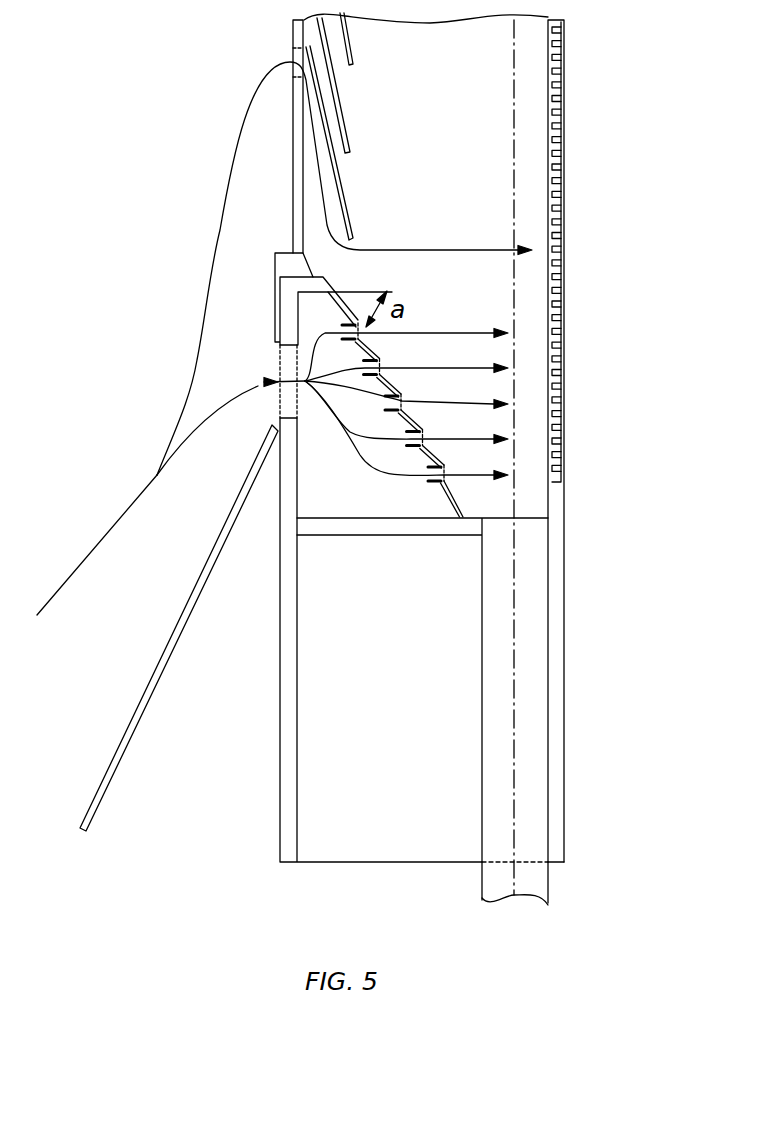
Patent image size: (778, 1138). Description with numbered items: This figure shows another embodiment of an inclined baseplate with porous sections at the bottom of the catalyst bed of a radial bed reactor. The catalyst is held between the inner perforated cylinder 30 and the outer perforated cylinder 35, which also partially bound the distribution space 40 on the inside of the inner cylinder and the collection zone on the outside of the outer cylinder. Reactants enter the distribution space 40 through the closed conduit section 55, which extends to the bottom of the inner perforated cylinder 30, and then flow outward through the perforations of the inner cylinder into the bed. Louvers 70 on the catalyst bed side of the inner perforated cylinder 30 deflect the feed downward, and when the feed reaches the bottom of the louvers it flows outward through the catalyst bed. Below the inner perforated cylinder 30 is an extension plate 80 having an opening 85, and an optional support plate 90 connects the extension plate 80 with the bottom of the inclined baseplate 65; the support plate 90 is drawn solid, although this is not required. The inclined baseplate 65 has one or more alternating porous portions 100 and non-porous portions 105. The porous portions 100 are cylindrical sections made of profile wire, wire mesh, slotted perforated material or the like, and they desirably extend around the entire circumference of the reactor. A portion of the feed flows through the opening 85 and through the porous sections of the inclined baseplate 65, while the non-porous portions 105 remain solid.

The inner perforated cylinder 30 is at (293, 33).
The outer perforated cylinder 35 is at (565, 118).
The distribution space 40 is at (153, 648).
The closed conduit section 55 is at (213, 548).
The inclined baseplate 65 is at (348, 296).
The louvers 70 is at (345, 113).
The extension plate 80 is at (275, 310).
The opening 85 is at (280, 363).
The support plate 90 is at (362, 536).
The porous portions 100 is at (360, 335).
The non-porous portions 105 is at (383, 356).